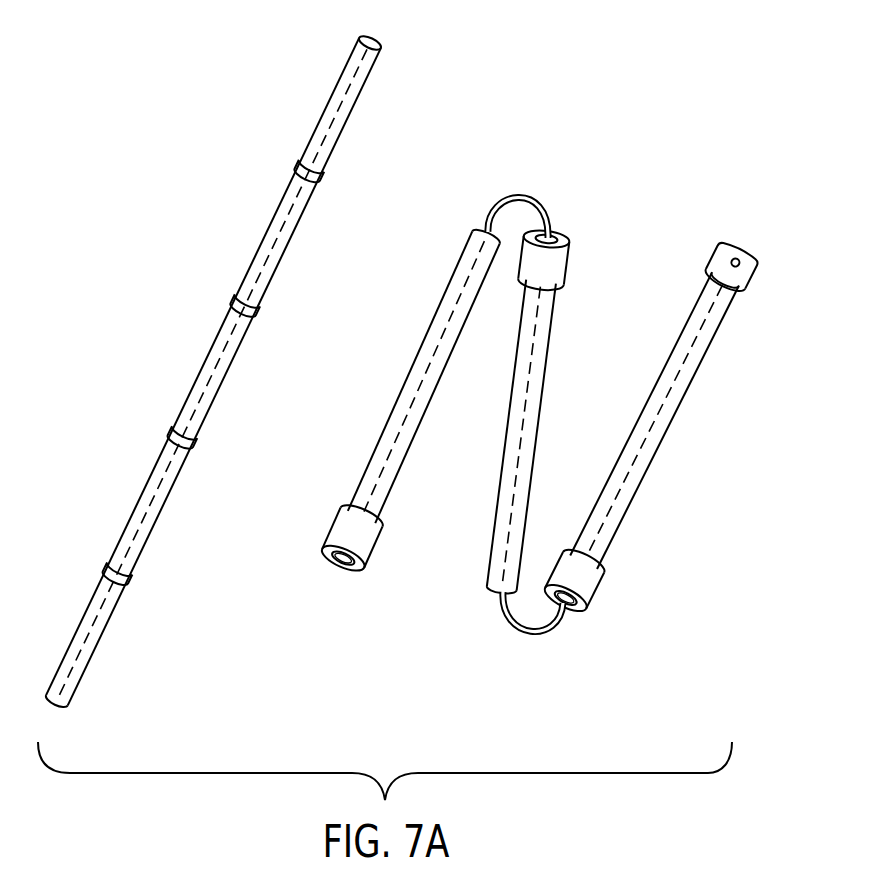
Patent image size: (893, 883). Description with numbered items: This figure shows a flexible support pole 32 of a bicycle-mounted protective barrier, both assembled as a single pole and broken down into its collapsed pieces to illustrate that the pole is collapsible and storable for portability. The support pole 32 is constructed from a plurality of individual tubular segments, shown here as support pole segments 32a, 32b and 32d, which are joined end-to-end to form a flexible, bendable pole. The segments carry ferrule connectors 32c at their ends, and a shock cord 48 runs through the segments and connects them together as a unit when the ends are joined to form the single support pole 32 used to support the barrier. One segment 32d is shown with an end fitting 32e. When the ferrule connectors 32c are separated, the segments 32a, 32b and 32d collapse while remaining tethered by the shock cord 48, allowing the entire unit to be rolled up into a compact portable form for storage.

The support pole 32 is at (252, 210).
The support pole segment 32a is at (417, 357).
The support pole segment 32b is at (543, 392).
The ferrule connector 32c is at (569, 262).
The support pole segment 32d is at (679, 407).
The end cap 32e is at (736, 258).
The shock cord 48 is at (528, 191).